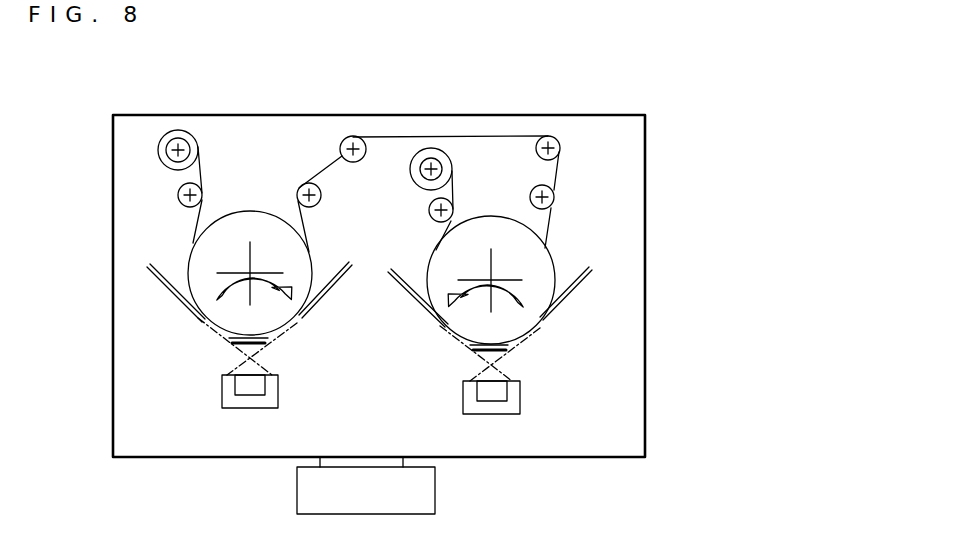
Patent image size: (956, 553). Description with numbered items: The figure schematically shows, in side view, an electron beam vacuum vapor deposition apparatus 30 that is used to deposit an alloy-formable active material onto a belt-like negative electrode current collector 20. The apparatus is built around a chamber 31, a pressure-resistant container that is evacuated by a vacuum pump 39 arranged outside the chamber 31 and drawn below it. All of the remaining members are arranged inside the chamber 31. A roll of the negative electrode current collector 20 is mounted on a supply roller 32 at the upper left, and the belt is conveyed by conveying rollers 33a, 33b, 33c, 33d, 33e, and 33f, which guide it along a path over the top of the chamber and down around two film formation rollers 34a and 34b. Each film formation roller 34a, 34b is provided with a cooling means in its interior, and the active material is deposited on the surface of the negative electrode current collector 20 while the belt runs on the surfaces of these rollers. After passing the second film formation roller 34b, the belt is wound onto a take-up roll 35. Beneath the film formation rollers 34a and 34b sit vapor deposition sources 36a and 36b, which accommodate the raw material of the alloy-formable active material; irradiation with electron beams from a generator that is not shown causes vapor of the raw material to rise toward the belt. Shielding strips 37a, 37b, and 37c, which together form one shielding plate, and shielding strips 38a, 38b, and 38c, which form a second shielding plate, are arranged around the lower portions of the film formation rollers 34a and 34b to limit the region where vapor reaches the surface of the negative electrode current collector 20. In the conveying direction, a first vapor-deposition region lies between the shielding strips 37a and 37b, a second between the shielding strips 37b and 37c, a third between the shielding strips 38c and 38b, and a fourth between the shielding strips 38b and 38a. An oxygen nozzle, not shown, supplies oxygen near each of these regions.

The electron beam vacuum vapor deposition apparatus 30 is at (153, 91).
The chamber 31 is at (367, 115).
The supply roller 32 is at (180, 131).
The take-up roll 35 is at (436, 148).
The negative electrode current collector 20 is at (203, 165).
The conveying roller 33a is at (178, 195).
The conveying roller 33b is at (321, 195).
The conveying roller 33c is at (340, 150).
The conveying roller 33d is at (560, 148).
The conveying roller 33e is at (554, 197).
The conveying roller 33f is at (429, 210).
The film formation roller 34a is at (198, 252).
The film formation roller 34b is at (436, 251).
The vapor deposition source 36a is at (222, 392).
The vapor deposition source 36b is at (463, 393).
The shielding strip 37a is at (170, 292).
The shielding strip 37b is at (270, 343).
The shielding strip 37c is at (309, 314).
The shielding strip 38a is at (412, 296).
The shielding strip 38b is at (508, 348).
The shielding strip 38c is at (553, 312).
The vacuum pump 39 is at (297, 488).